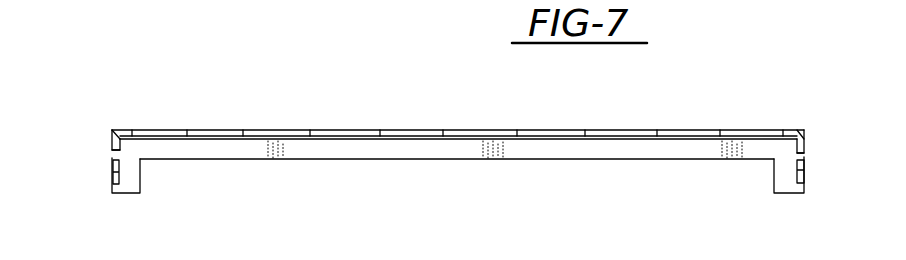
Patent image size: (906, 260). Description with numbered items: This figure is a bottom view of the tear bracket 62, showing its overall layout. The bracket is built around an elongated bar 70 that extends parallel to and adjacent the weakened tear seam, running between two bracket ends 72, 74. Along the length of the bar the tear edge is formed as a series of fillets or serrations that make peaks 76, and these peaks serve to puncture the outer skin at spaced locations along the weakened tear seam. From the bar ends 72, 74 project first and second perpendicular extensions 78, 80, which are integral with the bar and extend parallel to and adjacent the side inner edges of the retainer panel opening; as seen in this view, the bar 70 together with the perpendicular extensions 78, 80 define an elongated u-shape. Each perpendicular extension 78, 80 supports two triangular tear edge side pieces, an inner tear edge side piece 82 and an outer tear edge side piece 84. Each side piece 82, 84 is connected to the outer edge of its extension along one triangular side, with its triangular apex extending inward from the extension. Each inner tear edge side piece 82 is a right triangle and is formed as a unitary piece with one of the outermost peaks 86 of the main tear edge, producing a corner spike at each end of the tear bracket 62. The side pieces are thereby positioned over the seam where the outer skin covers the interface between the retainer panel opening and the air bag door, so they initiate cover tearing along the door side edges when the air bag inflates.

The tear bracket 62 is at (336, 131).
The elongated bar 70 is at (452, 153).
The bracket end 72 is at (807, 156).
The bracket end 74 is at (110, 157).
The peaks 76 is at (517, 129).
The first perpendicular extension 78 is at (780, 177).
The second perpendicular extension 80 is at (127, 187).
The inner tear edge side piece 82 is at (112, 142).
The outer tear edge side piece 84 is at (122, 171).
The outermost peak 86 is at (123, 132).